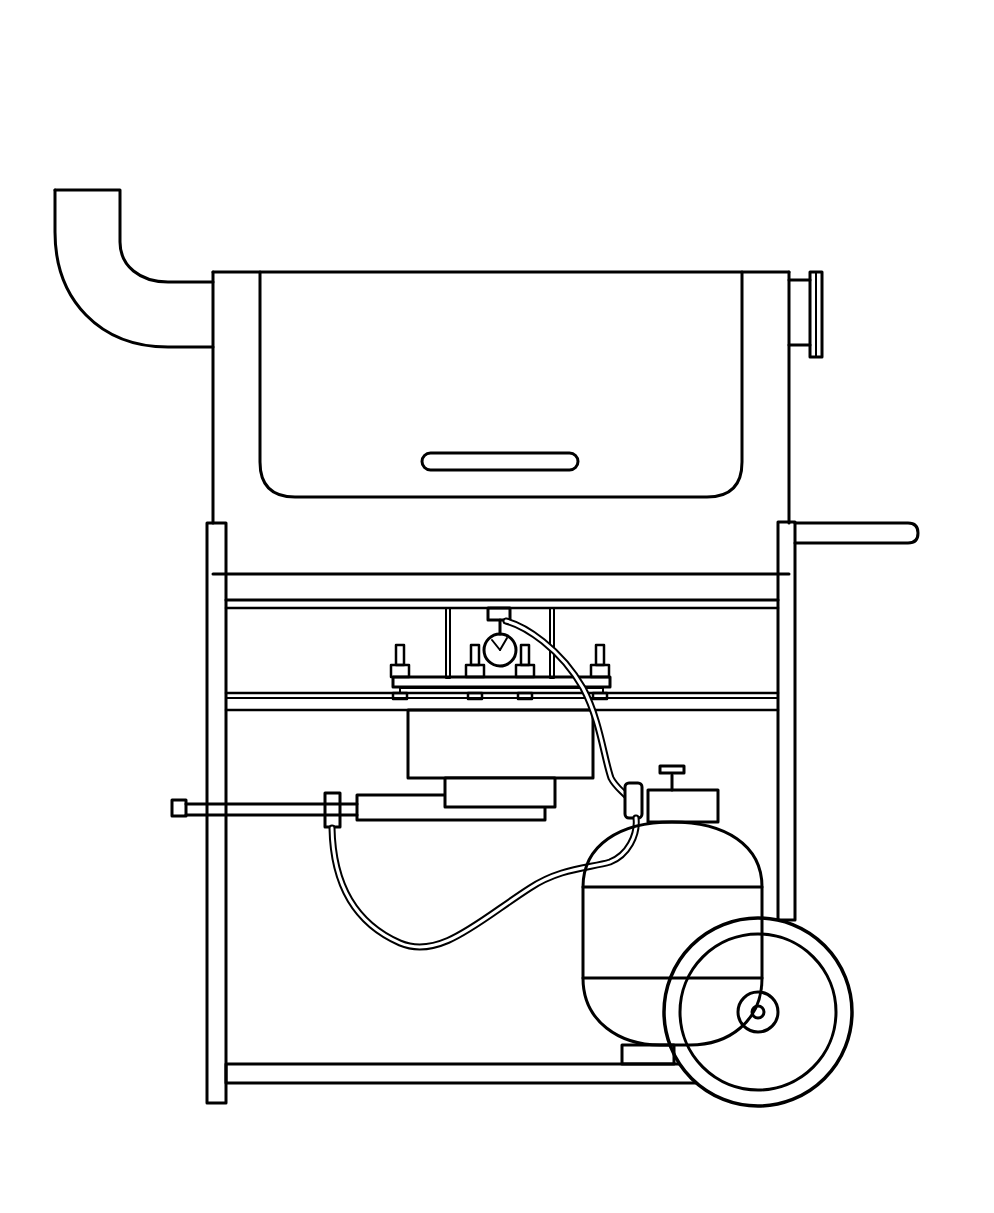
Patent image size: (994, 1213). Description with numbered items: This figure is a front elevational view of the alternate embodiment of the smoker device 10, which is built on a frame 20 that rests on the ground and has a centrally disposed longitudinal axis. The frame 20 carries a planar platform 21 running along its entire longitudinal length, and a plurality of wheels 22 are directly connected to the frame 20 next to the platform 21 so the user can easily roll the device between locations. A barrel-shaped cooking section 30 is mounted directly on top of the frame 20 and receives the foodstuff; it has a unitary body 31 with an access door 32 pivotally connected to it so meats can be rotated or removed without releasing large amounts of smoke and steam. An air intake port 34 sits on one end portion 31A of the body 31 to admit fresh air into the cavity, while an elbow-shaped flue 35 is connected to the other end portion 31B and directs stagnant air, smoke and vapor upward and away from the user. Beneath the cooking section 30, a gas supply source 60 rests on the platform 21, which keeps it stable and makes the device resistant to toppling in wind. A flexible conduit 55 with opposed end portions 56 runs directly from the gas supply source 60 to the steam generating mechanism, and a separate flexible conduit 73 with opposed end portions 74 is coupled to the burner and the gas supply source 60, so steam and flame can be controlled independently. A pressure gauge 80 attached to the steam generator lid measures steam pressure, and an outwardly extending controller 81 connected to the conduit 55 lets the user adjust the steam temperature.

The device 10 is at (368, 138).
The frame 20 is at (207, 937).
The planar platform 21 is at (405, 1064).
The wheels 22 is at (757, 1070).
The cooking section 30 is at (176, 485).
The unitary body 31 is at (765, 288).
The end portion 31A is at (792, 407).
The end portion 31B is at (213, 421).
The access door 32 is at (507, 310).
The air intake port 34 is at (820, 306).
The flue 35 is at (105, 205).
The flexible conduit 55 is at (400, 946).
The end portions 56 is at (325, 830).
The gas supply source 60 is at (596, 940).
The flexible conduit 73 is at (606, 708).
The end portions 74 is at (548, 617).
The pressure gauge 80 is at (445, 630).
The controller 81 is at (170, 808).